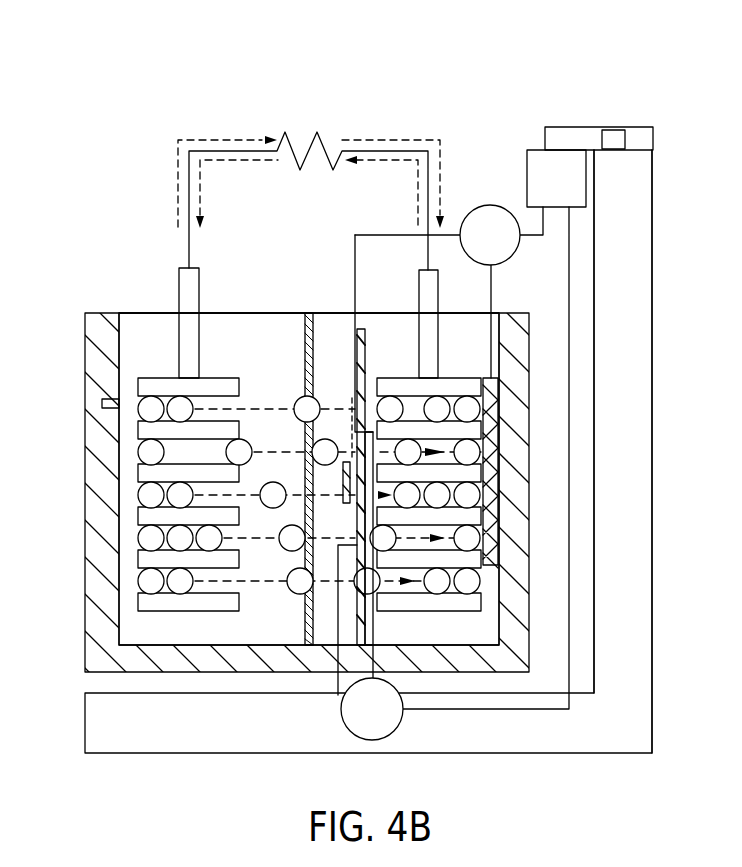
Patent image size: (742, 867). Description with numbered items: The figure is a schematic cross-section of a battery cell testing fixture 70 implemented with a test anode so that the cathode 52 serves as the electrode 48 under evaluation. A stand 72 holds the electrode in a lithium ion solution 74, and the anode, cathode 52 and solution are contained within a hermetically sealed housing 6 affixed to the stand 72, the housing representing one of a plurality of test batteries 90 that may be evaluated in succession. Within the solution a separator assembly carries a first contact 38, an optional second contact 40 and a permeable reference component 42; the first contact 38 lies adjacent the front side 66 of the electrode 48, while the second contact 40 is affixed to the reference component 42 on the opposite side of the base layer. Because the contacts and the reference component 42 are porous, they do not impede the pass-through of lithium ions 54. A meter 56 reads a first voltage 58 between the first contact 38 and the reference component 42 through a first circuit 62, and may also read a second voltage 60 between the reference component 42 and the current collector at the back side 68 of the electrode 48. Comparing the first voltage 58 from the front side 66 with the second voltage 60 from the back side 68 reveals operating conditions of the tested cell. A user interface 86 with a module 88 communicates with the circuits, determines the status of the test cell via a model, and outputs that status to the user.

The hermetically sealed housing 6 is at (97, 428).
The first contact 38 is at (370, 537).
The second contact 40 is at (352, 398).
The reference component 42 is at (345, 490).
The electrode 48 is at (472, 603).
The cathode 52 is at (472, 560).
The lithium ions 54 is at (305, 397).
The meter 56 is at (545, 150).
The first voltage 58 is at (390, 740).
The second voltage 60 is at (472, 211).
The first circuit 62 is at (337, 686).
The front side 66 is at (458, 533).
The back side 68 is at (472, 515).
The battery cell testing fixture 70 is at (606, 92).
The stand 72 is at (638, 184).
The lithium ion solution 74 is at (135, 322).
The user interface 86 is at (642, 143).
The module 88 is at (615, 138).
The test batteries 90 is at (86, 566).